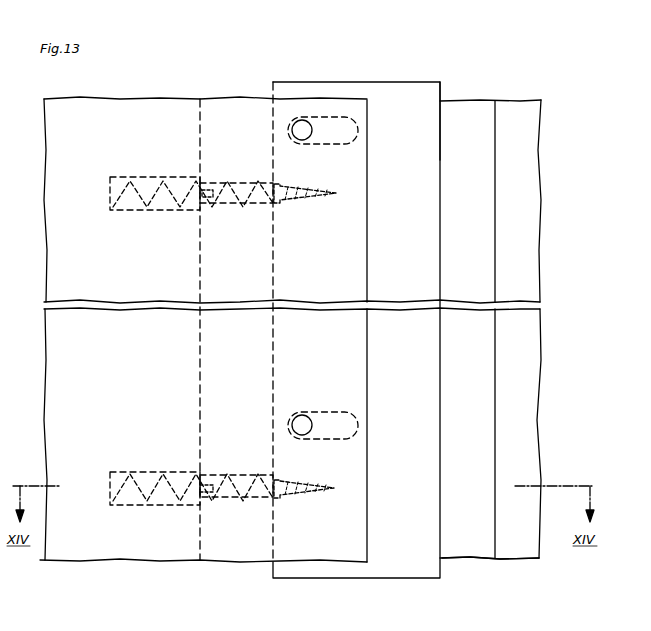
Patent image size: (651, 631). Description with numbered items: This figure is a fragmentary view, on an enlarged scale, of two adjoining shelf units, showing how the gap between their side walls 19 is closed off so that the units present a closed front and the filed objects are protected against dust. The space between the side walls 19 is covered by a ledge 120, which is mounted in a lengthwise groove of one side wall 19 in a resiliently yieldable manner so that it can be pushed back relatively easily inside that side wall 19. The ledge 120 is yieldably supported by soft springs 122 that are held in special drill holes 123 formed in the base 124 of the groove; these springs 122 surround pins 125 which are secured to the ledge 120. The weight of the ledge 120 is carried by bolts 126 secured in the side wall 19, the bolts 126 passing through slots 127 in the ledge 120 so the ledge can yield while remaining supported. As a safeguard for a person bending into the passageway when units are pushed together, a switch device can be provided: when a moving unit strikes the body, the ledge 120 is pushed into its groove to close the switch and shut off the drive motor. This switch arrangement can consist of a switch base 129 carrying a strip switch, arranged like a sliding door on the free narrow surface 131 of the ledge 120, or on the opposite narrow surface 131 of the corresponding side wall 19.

The side wall 19 is at (118, 117).
The ledge 120 is at (410, 113).
The soft springs 122 is at (177, 199).
The drill holes 123 is at (146, 187).
The base of the groove 124 is at (198, 363).
The pins 125 is at (243, 191).
The bolts 126 is at (298, 119).
The slots 127 is at (337, 133).
The switch base 129 is at (472, 562).
The narrow surface 131 is at (441, 157).